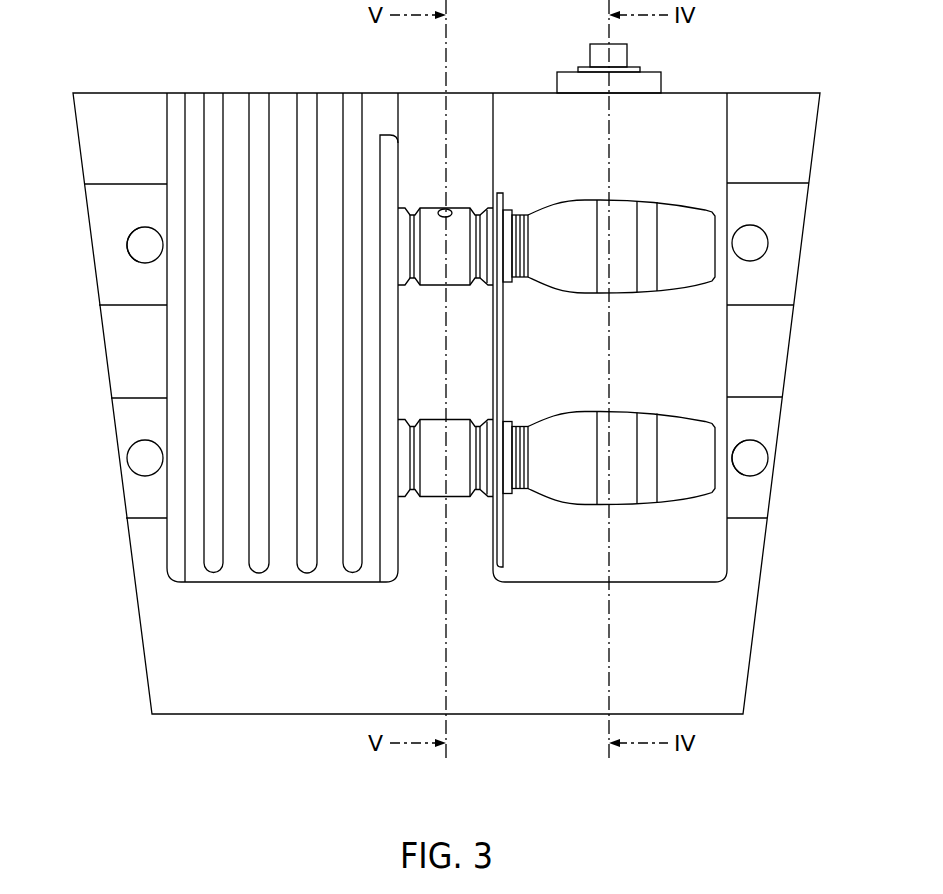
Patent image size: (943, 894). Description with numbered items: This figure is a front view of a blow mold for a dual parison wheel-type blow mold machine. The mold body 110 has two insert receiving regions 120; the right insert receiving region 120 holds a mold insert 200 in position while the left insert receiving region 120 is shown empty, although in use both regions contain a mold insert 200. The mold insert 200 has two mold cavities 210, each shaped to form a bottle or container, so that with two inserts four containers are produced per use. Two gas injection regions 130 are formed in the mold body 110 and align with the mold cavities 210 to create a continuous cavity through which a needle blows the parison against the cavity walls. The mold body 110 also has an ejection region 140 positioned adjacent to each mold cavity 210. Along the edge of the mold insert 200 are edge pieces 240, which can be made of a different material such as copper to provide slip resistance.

The mold body 110 is at (740, 683).
The insert receiving region 120 is at (285, 192).
The gas injection region 130 is at (458, 218).
The ejection region 140 is at (100, 212).
The mold insert 200 is at (690, 107).
The mold cavity 210 is at (561, 222).
The edge piece 240 is at (498, 337).